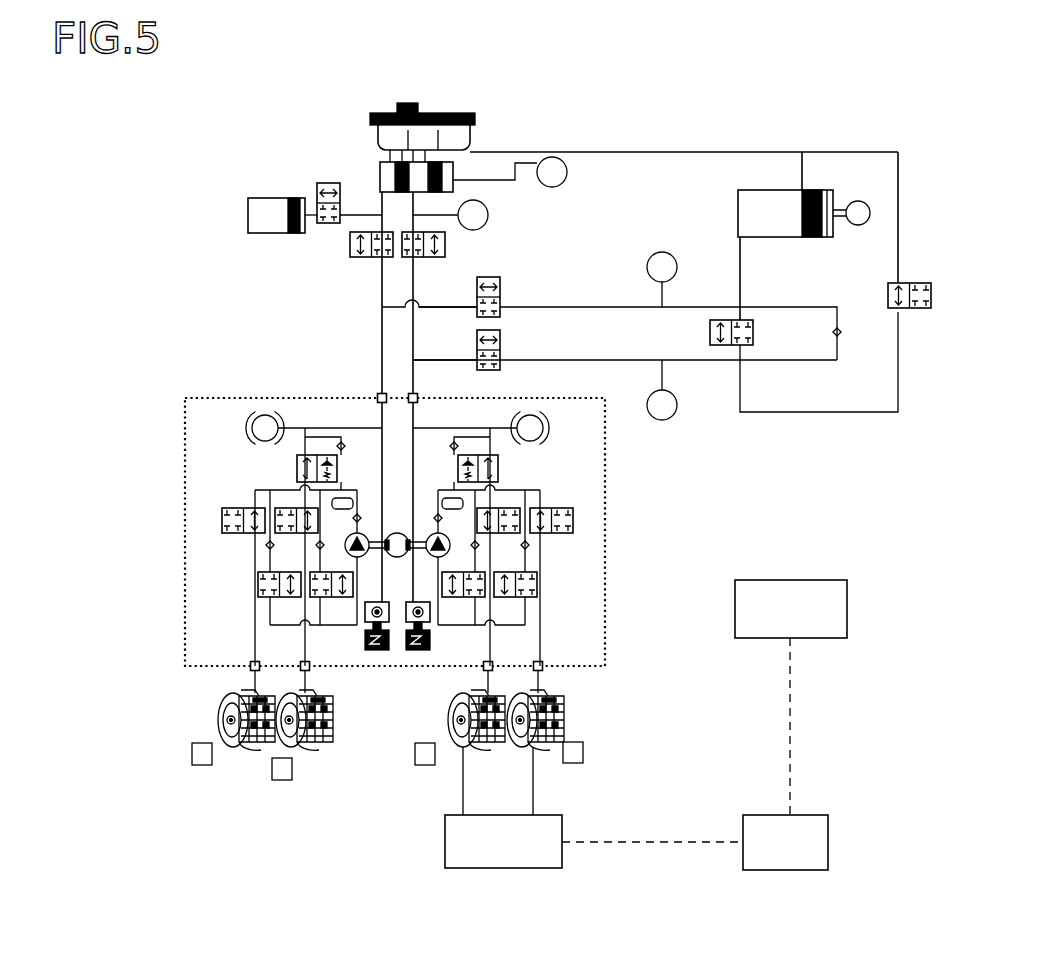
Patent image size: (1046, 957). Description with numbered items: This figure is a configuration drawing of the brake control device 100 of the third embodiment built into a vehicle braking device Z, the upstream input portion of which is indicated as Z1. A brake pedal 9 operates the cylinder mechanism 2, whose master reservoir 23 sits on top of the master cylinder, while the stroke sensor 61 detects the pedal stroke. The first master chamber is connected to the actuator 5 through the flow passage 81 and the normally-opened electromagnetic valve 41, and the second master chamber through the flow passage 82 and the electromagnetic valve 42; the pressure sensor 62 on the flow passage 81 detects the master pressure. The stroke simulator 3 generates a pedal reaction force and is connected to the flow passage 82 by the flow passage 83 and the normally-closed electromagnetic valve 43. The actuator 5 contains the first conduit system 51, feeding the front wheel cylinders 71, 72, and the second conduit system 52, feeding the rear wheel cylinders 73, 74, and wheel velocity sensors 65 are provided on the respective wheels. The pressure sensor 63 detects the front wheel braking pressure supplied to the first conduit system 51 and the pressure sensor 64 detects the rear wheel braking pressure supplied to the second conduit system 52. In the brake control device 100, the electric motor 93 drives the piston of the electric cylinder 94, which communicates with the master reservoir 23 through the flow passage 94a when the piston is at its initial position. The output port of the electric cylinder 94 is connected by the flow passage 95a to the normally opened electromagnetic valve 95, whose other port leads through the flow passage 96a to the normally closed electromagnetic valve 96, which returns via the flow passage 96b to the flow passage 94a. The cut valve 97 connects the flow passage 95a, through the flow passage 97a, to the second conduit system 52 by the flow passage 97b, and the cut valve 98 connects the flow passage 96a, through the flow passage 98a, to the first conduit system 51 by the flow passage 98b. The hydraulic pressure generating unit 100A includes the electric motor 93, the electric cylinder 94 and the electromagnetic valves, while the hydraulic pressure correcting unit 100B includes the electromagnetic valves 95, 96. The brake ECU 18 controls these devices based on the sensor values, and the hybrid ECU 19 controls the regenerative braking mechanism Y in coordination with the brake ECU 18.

The vehicle braking device Z is at (200, 128).
The input device Z1 is at (265, 297).
The cylinder mechanism 2 is at (355, 160).
The stroke simulator 3 is at (248, 218).
The actuator 5 is at (391, 501).
The brake pedal 9 is at (516, 178).
The brake ECU 18 is at (738, 580).
The hybrid ECU 19 is at (828, 826).
The master reservoir 23 is at (388, 143).
The electromagnetic valve 41 is at (444, 246).
The electromagnetic valve 42 is at (348, 250).
The electromagnetic valve 43 is at (317, 190).
The first conduit system 51 is at (555, 478).
The second conduit system 52 is at (230, 478).
The stroke sensor 61 is at (568, 183).
The pressure sensor 62 is at (486, 227).
The pressure sensor 63 is at (676, 413).
The pressure sensor 64 is at (677, 271).
The wheel velocity sensor 65 is at (194, 755).
The wheel cylinder 71 is at (562, 700).
The wheel cylinder 72 is at (458, 697).
The wheel cylinder 73 is at (322, 746).
The wheel cylinder 74 is at (258, 750).
The flow passage 81 is at (415, 375).
The flow passage 82 is at (380, 362).
The flow passage 83 is at (347, 218).
The electric motor 93 is at (862, 204).
The electric cylinder 94 is at (738, 212).
The flow passage 94a is at (800, 172).
The electromagnetic valve 95 is at (755, 334).
The flow passage 95a is at (745, 268).
The electromagnetic valve 96 is at (905, 284).
The flow passage 96a is at (815, 412).
The flow passage 96b is at (850, 152).
The cut valve 97 is at (502, 300).
The flow passage 97a is at (628, 306).
The flow passage 97b is at (446, 307).
The cut valve 98 is at (502, 353).
The flow passage 98a is at (645, 360).
The flow passage 98b is at (444, 360).
The brake control device 100 is at (762, 280).
The hydraulic pressure generating unit 100A is at (787, 169).
The hydraulic pressure correcting unit 100B is at (827, 284).
The regenerative braking mechanism Y is at (445, 850).